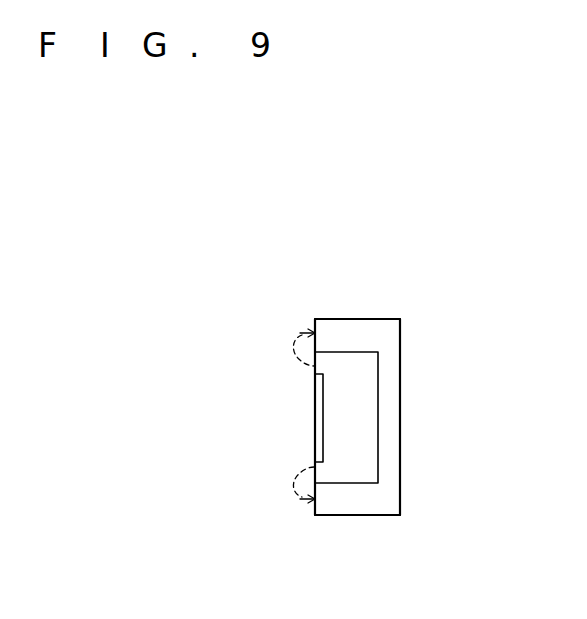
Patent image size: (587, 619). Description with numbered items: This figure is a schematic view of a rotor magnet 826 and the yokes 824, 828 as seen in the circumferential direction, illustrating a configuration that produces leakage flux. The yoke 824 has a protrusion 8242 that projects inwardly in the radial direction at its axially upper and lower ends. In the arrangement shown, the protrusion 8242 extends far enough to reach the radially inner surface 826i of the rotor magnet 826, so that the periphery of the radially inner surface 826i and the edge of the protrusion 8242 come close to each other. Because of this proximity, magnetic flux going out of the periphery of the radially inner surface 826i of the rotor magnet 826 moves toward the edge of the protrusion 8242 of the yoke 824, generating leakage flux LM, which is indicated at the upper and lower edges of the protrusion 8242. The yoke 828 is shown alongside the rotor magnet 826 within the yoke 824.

The yoke 824 is at (393, 418).
The rotor magnet 826 is at (367, 379).
The radially inner surface of the rotor magnet 826i is at (313, 369).
The yoke 828 is at (317, 423).
The protrusion 8242 is at (325, 323).
The leakage flux LM is at (292, 343).